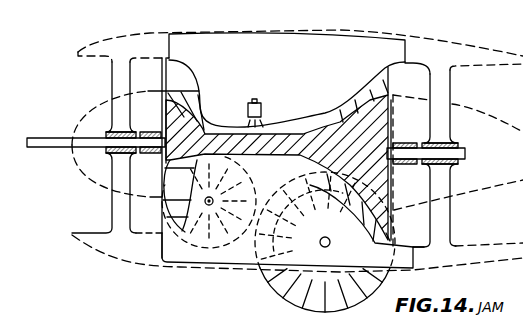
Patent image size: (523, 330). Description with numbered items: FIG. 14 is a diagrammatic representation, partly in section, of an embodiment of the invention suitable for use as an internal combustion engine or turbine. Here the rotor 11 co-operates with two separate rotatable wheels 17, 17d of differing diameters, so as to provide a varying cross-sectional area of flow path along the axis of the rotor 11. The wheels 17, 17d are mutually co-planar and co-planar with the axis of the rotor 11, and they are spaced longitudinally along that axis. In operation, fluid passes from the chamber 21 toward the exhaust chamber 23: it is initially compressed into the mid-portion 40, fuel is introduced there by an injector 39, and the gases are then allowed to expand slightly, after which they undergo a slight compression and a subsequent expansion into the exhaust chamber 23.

The rotor 11 is at (334, 145).
The rotatable wheel 17 is at (163, 218).
The rotatable wheel 17d is at (270, 278).
The chamber 21 is at (140, 208).
The exhaust chamber 23 is at (410, 228).
The injector 39 is at (261, 100).
The mid-portion 40 is at (232, 127).